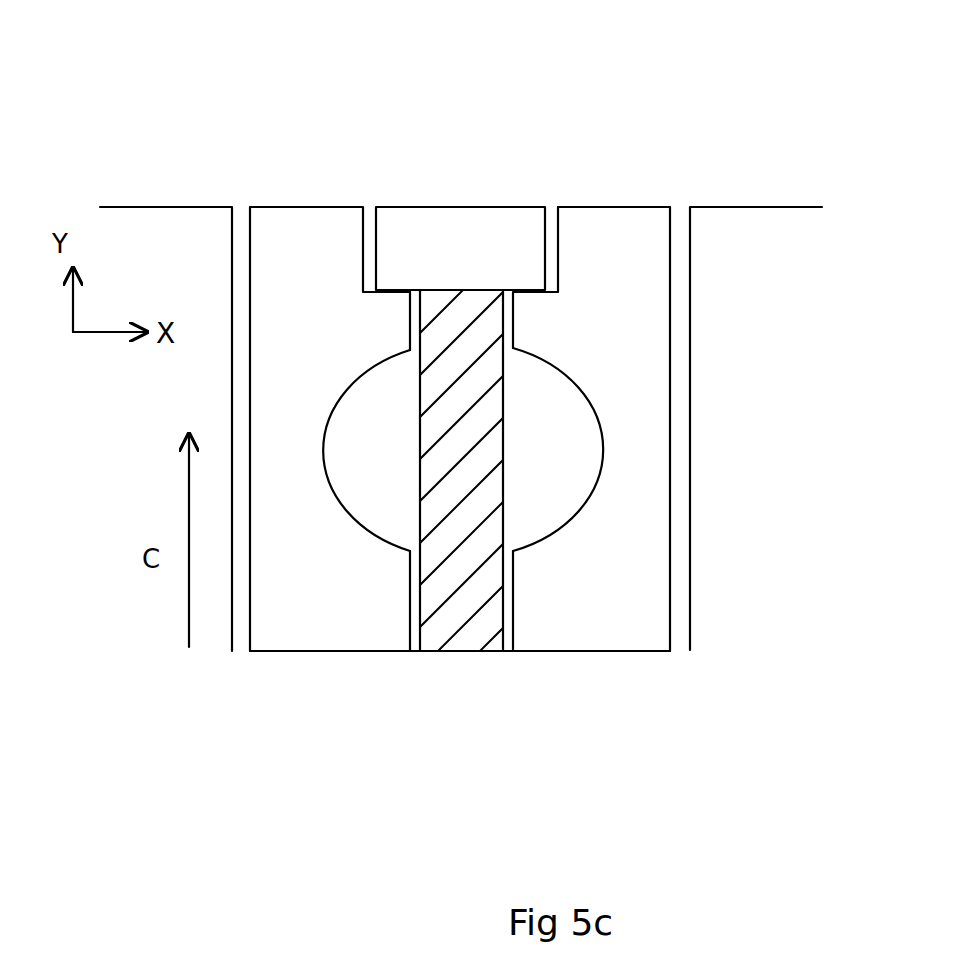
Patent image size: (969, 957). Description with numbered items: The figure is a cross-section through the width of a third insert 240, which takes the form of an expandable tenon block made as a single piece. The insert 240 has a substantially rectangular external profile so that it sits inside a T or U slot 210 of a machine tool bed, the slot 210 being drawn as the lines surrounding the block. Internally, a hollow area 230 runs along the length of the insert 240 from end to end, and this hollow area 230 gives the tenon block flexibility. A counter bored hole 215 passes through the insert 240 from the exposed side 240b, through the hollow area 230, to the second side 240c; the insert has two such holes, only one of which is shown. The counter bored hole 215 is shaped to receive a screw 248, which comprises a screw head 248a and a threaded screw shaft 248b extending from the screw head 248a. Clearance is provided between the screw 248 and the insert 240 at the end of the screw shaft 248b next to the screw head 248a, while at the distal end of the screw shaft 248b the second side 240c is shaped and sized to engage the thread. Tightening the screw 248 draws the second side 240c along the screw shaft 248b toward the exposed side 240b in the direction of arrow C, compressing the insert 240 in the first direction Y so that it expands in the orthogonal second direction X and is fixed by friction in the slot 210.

The slot 210 is at (692, 290).
The counter bored hole 215 is at (560, 245).
The hollow area 230 is at (547, 418).
The insert 240 is at (487, 404).
The exposed side 240b is at (313, 207).
The second side 240c is at (397, 651).
The screw 248 is at (598, 429).
The screw head 248a is at (527, 230).
The threaded screw shaft 248b is at (485, 458).